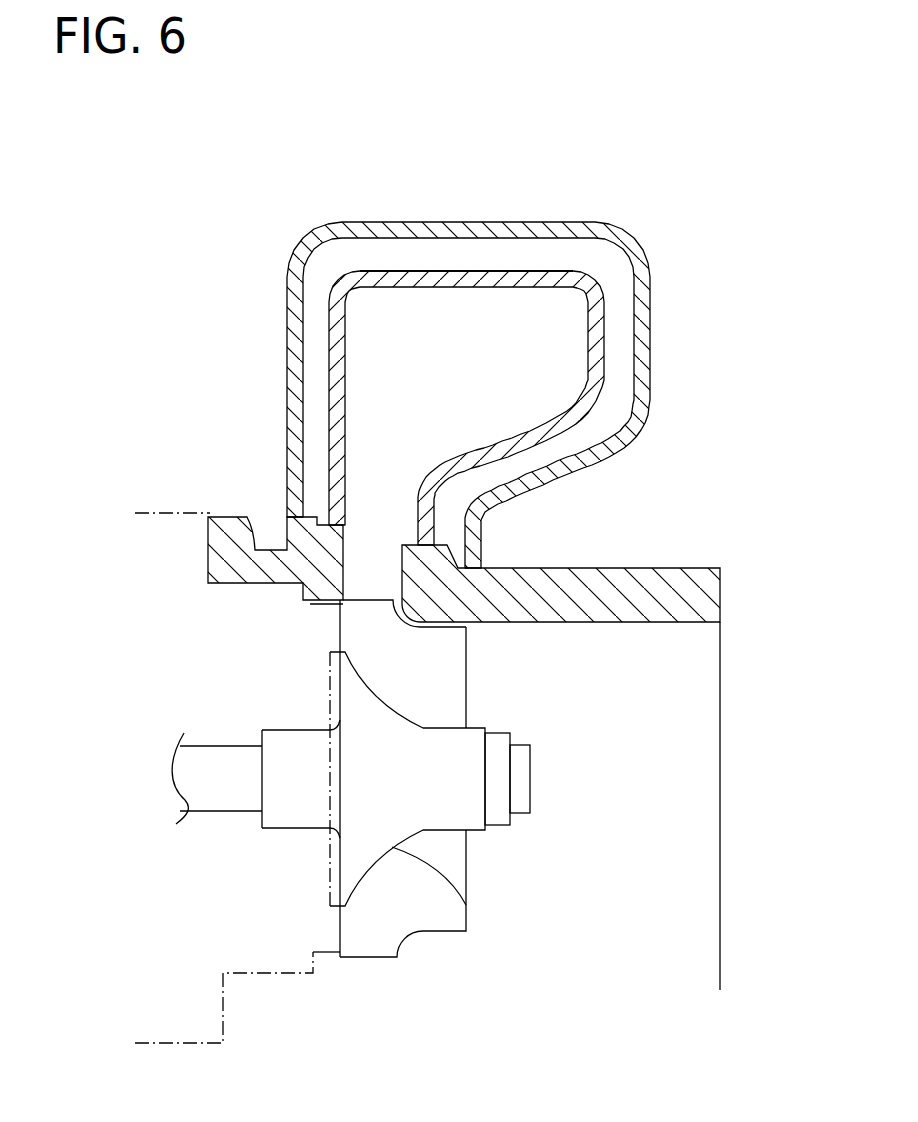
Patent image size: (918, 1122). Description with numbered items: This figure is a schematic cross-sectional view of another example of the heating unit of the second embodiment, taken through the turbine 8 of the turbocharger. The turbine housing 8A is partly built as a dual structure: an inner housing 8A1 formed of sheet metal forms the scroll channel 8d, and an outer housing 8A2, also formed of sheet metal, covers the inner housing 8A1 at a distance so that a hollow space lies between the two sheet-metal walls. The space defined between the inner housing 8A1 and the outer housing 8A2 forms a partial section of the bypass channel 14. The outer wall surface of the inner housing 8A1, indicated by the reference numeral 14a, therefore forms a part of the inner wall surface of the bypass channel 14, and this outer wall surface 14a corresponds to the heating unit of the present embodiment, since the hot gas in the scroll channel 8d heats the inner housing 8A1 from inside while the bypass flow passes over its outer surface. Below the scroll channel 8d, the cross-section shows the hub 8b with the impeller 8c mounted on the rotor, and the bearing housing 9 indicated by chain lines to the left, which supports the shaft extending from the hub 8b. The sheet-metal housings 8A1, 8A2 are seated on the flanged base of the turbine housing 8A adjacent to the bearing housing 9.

The turbine 8 is at (198, 285).
The turbine housing 8A is at (522, 369).
The inner housing 8A1 is at (603, 355).
The outer housing 8A2 is at (652, 321).
The hub 8b is at (460, 905).
The impeller 8c is at (472, 867).
The scroll channel 8d is at (469, 363).
The bearing housing 9 is at (162, 513).
The bypass channel 14 is at (480, 265).
The outer wall surface of the inner housing 14a is at (417, 270).